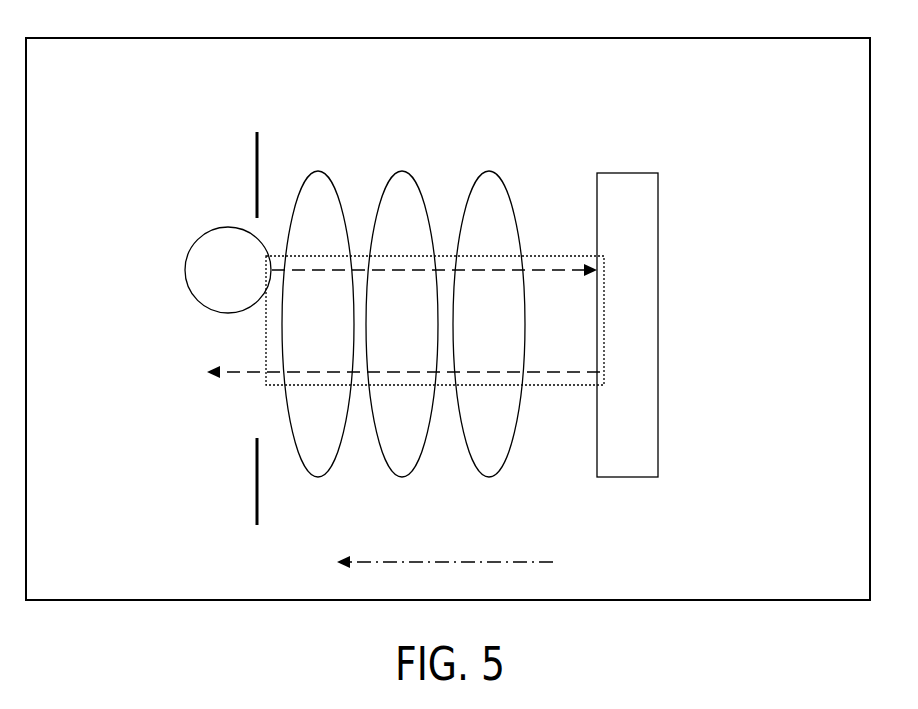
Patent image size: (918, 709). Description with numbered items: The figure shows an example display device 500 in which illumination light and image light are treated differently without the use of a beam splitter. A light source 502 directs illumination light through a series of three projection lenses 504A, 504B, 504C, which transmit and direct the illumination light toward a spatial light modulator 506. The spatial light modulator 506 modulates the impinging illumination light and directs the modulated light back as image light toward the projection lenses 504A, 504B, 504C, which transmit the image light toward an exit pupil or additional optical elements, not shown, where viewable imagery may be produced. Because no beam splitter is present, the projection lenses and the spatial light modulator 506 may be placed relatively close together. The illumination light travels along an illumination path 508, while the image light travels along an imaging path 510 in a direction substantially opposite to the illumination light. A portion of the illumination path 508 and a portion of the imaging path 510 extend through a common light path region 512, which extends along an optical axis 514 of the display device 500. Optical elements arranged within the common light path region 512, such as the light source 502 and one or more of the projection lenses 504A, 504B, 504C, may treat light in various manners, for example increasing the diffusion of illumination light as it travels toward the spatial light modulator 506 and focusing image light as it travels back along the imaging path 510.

The display device 500 is at (680, 216).
The light source 502 is at (211, 282).
The projection lens 504A is at (332, 182).
The projection lens 504B is at (417, 182).
The projection lens 504C is at (502, 182).
The spatial light modulator 506 is at (613, 330).
The illumination path 508 is at (568, 281).
The imaging path 510 is at (566, 390).
The common light path region 512 is at (265, 387).
The optical axis 514 is at (553, 561).